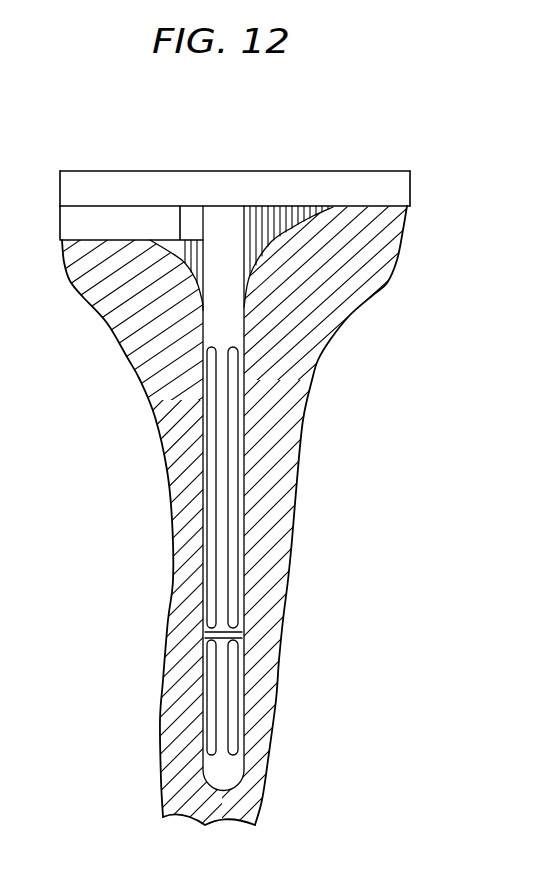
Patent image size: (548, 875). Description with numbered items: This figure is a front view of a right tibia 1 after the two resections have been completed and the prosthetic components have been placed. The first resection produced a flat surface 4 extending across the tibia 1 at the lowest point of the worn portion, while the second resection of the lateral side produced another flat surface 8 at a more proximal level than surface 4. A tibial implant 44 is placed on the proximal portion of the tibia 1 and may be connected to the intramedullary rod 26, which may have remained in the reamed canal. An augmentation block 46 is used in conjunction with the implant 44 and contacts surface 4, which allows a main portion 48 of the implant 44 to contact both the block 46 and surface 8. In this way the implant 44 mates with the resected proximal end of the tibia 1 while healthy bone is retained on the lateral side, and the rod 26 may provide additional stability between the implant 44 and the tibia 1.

The tibia 1 is at (170, 590).
The flat surface 4 is at (108, 243).
The flat surface 8 is at (377, 205).
The intramedullary rod 26 is at (219, 479).
The tibial implant 44 is at (170, 205).
The augmentation block 46 is at (97, 217).
The main portion 48 is at (312, 170).